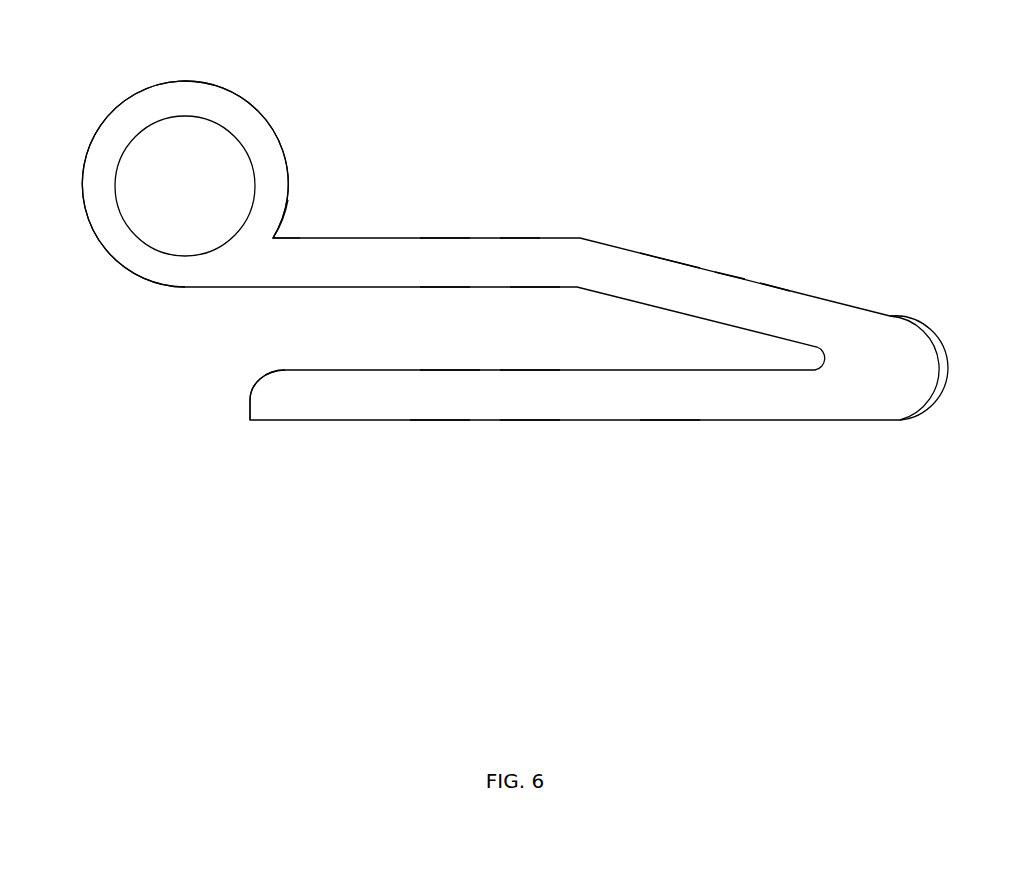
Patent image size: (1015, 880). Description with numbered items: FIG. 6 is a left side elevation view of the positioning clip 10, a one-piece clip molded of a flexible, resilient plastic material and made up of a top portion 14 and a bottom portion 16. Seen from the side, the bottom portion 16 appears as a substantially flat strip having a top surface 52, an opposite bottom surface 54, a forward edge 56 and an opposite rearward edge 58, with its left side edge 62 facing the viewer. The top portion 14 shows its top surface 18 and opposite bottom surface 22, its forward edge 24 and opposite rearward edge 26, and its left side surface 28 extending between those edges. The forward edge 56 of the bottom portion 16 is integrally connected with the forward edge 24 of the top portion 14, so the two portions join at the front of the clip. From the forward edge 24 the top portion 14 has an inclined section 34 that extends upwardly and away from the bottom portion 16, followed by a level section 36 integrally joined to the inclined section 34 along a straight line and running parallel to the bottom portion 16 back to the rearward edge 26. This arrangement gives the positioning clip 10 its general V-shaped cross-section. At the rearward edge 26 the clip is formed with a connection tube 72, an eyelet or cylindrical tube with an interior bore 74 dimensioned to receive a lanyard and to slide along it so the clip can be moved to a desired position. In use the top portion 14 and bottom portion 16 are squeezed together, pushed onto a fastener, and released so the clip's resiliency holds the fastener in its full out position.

The positioning clip 10 is at (649, 158).
The top portion 14 is at (671, 257).
The bottom portion 16 is at (662, 423).
The top surface 18 is at (730, 275).
The bottom surface 22 is at (524, 289).
The forward edge 24 is at (948, 350).
The rearward edge 26 is at (275, 238).
The left side surface 28 is at (440, 254).
The inclined section 34 is at (773, 287).
The level section 36 is at (516, 238).
The top surface 52 is at (447, 370).
The bottom surface 54 is at (424, 421).
The forward edge 56 is at (950, 388).
The rearward edge 58 is at (250, 400).
The left side edge 62 is at (512, 400).
The connection tube 72 is at (222, 90).
The interior bore 74 is at (217, 159).